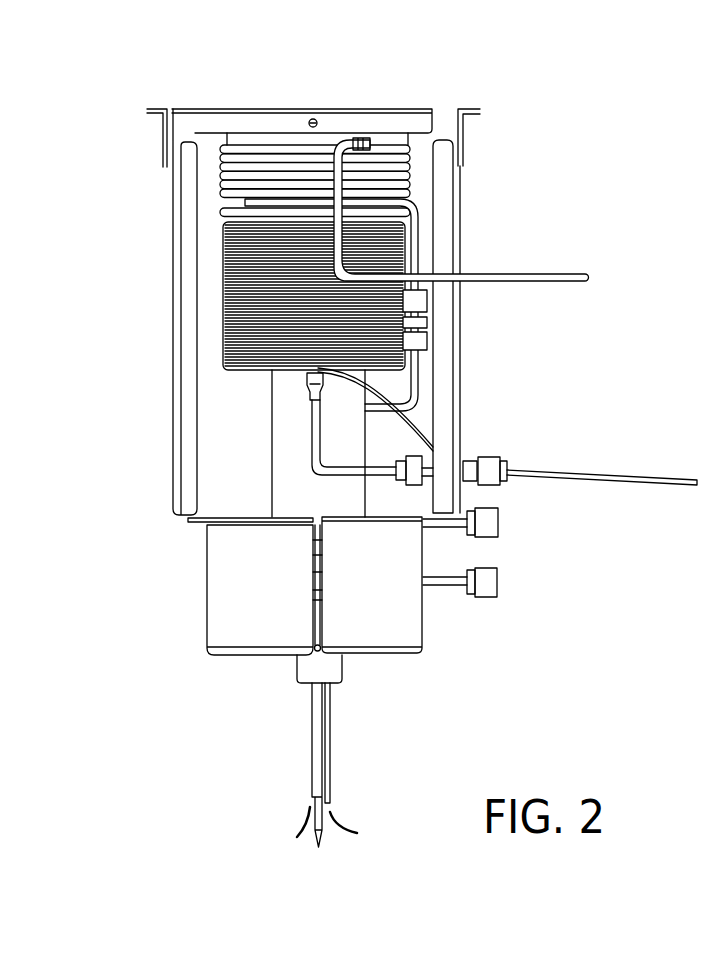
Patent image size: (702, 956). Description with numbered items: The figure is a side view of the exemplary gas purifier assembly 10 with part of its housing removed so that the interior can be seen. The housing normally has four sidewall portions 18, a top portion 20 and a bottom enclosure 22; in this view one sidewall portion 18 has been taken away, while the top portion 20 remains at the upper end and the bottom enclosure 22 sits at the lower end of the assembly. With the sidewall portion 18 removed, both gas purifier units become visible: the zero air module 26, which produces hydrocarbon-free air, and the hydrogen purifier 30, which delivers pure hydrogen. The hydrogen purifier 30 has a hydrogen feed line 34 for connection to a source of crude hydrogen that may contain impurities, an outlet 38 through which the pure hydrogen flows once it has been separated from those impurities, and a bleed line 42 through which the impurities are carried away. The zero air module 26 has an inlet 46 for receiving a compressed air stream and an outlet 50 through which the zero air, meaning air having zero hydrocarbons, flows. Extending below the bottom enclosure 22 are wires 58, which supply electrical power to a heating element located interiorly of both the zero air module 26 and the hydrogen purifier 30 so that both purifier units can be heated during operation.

The gas purifier assembly 10 is at (512, 92).
The sidewall portion 18 is at (170, 307).
The top portion 20 is at (350, 110).
The bottom enclosure 22 is at (220, 617).
The zero air module 26 is at (260, 444).
The hydrogen purifier 30 is at (216, 269).
The hydrogen feed line 34 is at (553, 273).
The outlet 38 is at (490, 455).
The bleed line 42 is at (613, 473).
The inlet 46 is at (497, 577).
The outlet 50 is at (498, 513).
The wires 58 is at (303, 750).